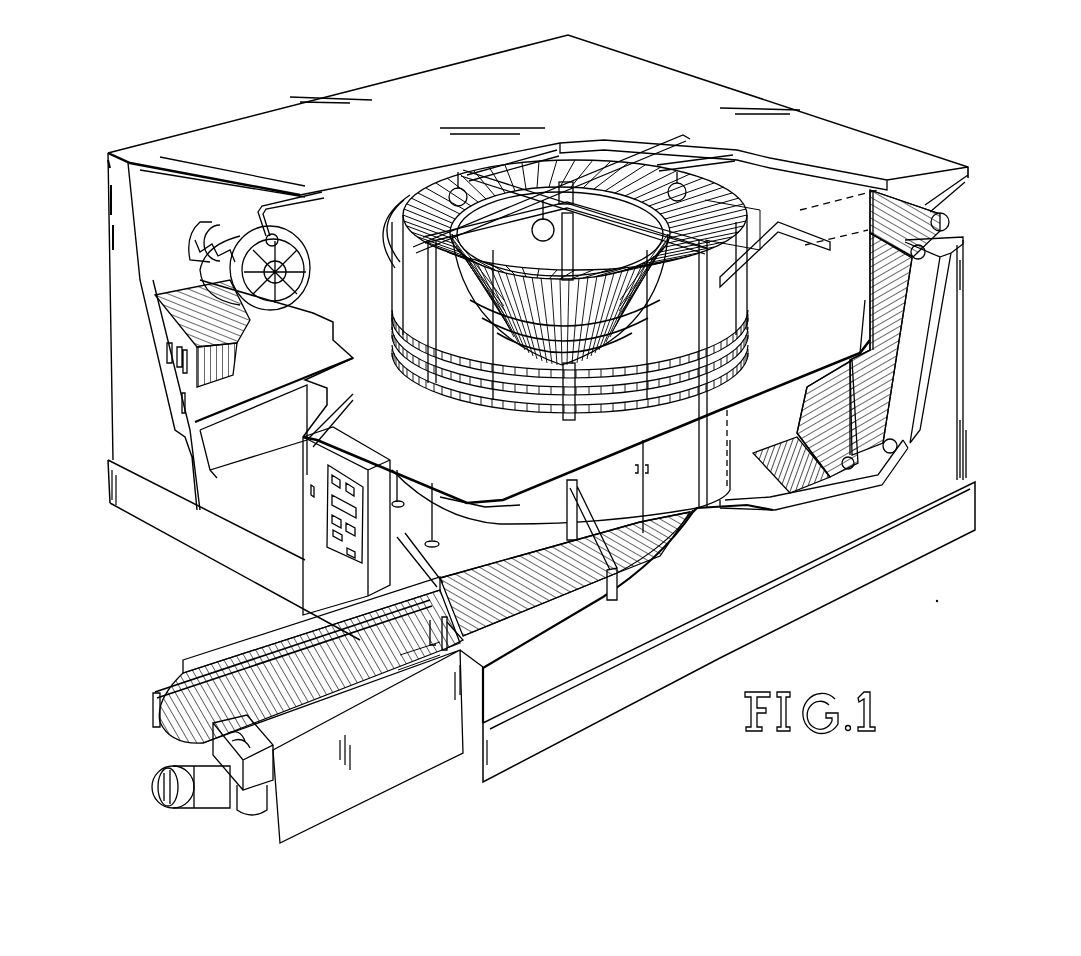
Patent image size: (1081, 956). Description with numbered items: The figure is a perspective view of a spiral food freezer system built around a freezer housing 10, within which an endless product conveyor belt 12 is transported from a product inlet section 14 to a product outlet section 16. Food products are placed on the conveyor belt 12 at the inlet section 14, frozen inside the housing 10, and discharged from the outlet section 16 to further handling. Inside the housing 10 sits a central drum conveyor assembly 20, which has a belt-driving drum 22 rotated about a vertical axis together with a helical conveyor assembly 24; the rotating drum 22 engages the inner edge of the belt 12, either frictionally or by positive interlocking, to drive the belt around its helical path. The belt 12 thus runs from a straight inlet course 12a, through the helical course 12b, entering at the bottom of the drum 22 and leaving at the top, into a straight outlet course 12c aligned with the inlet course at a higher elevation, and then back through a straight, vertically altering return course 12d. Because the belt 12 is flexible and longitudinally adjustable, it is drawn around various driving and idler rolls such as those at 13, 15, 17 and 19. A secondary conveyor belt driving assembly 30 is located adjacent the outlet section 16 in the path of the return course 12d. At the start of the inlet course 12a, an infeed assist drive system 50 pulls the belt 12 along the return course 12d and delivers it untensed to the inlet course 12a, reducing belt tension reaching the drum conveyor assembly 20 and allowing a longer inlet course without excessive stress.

The freezer housing 10 is at (712, 78).
The conveyor belt 12 is at (906, 323).
The inlet course 12a is at (333, 665).
The helical course 12b is at (652, 296).
The outlet course 12c is at (900, 200).
The return course 12d is at (903, 400).
The roll 13 is at (948, 222).
The product inlet section 14 is at (193, 636).
The roll 15 is at (905, 355).
The product outlet section 16 is at (985, 198).
The roll 17 is at (900, 447).
The roll 19 is at (850, 468).
The central drum conveyor assembly 20 is at (487, 420).
The belt-driving drum 22 is at (660, 207).
The helical conveyor assembly 24 is at (615, 355).
The secondary conveyor belt driving assembly 30 is at (925, 252).
The infeed assist drive system 50 is at (222, 810).